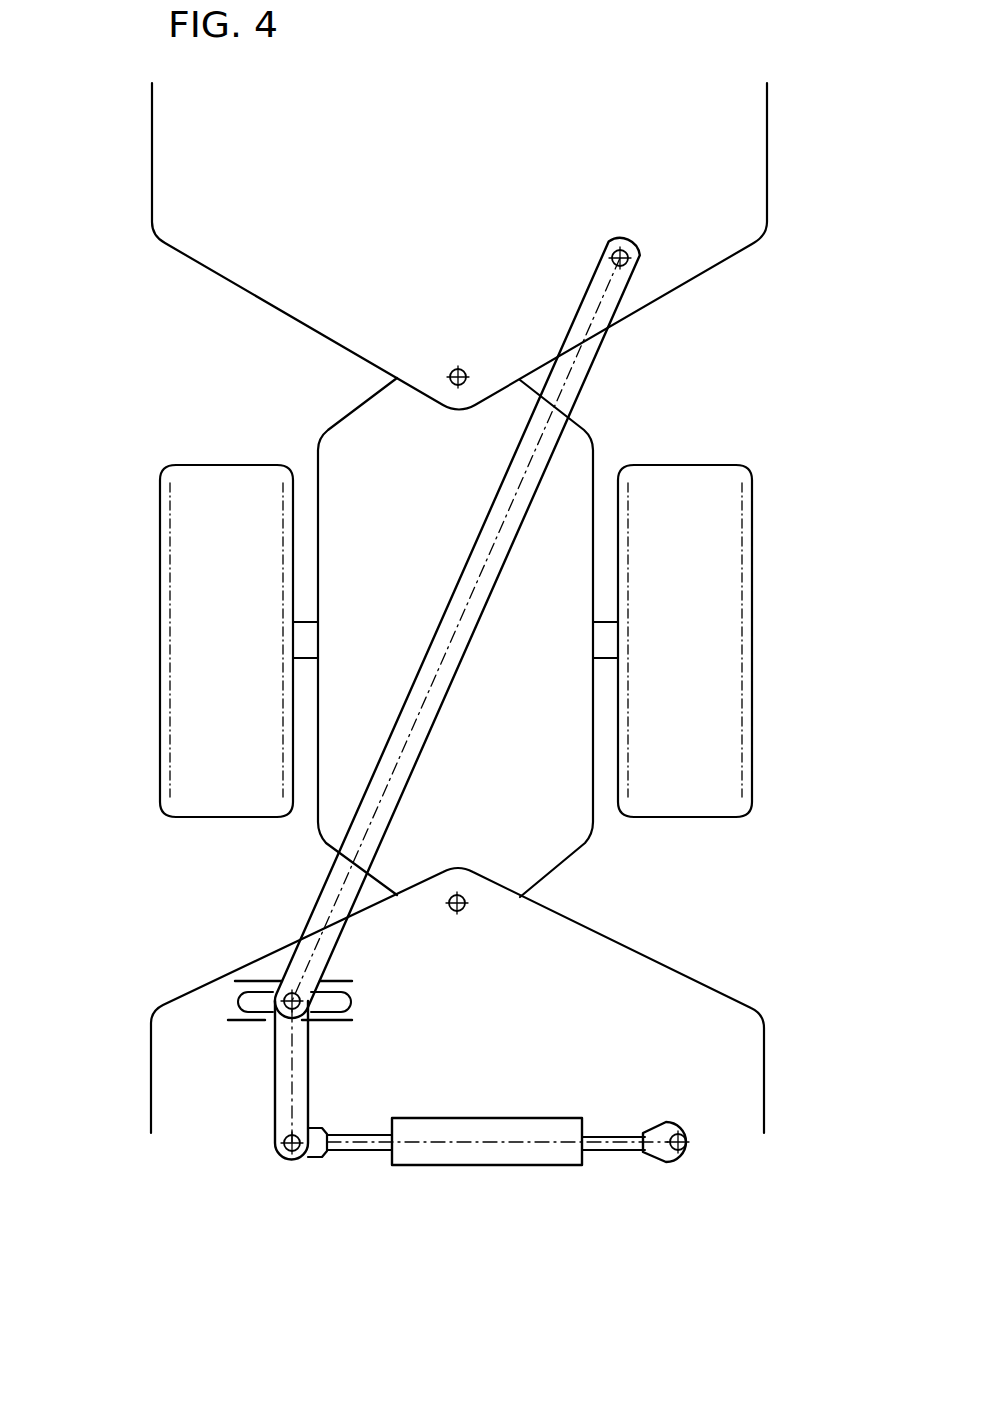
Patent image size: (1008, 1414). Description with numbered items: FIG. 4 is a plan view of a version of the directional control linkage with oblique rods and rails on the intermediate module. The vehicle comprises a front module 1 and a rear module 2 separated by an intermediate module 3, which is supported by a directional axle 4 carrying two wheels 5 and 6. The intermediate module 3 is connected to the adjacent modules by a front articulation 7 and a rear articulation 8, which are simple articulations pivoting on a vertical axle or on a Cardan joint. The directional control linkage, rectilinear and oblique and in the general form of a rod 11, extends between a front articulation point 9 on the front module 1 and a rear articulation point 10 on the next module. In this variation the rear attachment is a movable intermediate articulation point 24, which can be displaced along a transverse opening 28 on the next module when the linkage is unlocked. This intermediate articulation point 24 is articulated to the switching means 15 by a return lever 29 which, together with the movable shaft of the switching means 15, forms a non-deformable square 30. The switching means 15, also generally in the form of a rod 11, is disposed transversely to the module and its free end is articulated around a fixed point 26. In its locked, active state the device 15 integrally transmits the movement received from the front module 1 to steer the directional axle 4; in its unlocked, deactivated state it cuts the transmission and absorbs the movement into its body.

The front module 1 is at (212, 232).
The rear module 2 is at (697, 1032).
The intermediate module 3 is at (550, 825).
The directional axle 4 is at (603, 637).
The wheel 5 is at (192, 650).
The wheel 6 is at (720, 743).
The front articulation 7 is at (415, 357).
The rear articulation 8 is at (510, 932).
The front articulation point 9 is at (640, 270).
The rear articulation point 10 is at (699, 1217).
The rod 11 is at (488, 1231).
The device for activating and deactivating the linkage 15 is at (469, 1192).
The movable intermediate articulation point 24 is at (287, 992).
The fixed point 26 is at (668, 1160).
The transverse opening 28 is at (205, 1007).
The return lever 29 is at (293, 1060).
The non-deformable square 30 is at (240, 1130).